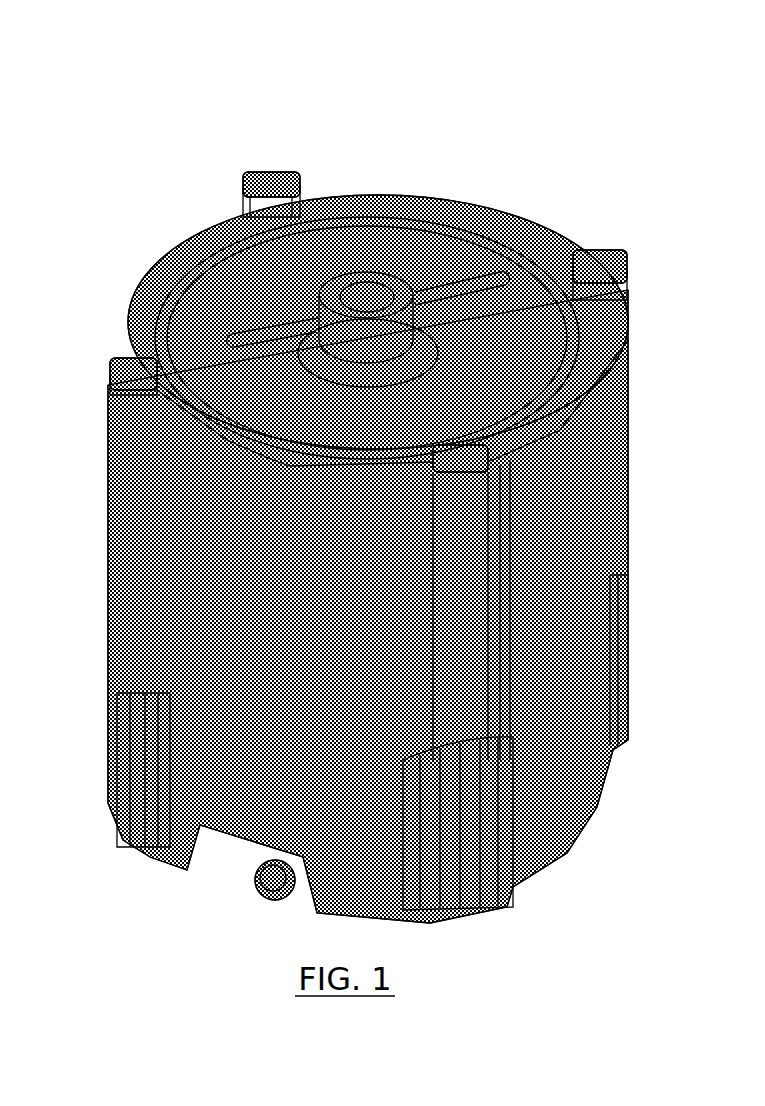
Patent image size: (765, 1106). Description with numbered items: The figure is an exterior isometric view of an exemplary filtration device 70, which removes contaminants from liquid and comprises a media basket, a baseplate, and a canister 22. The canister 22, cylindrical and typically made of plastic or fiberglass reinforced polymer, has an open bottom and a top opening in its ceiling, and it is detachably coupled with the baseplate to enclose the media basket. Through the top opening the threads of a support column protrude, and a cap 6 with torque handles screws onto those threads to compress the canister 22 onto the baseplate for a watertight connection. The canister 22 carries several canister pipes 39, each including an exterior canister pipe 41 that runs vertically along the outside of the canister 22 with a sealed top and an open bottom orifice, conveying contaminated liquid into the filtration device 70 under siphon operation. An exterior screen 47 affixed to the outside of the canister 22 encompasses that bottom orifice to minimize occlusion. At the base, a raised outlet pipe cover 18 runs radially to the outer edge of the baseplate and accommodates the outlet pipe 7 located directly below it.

The filtration device 70 is at (563, 155).
The canister 22 is at (390, 238).
The cap 6 is at (340, 297).
The canister pipe 39 is at (260, 173).
The exterior canister pipe 41 is at (472, 567).
The exterior screen 47 is at (473, 885).
The outlet pipe cover 18 is at (233, 848).
The outlet pipe 7 is at (262, 897).